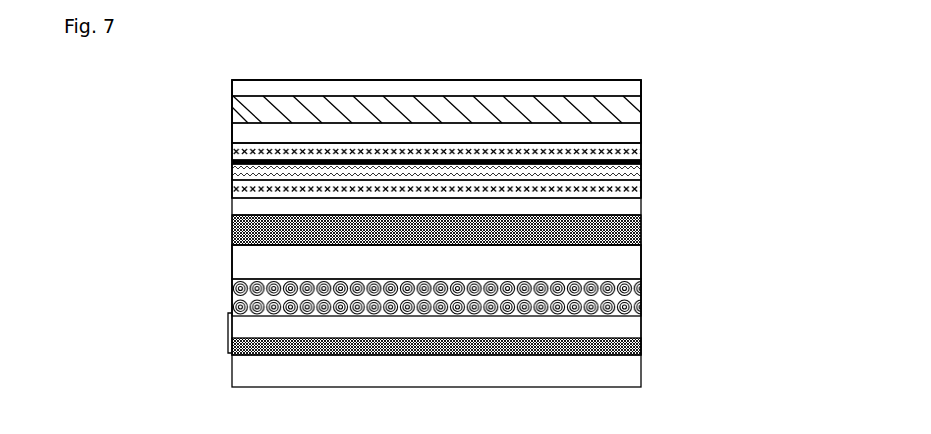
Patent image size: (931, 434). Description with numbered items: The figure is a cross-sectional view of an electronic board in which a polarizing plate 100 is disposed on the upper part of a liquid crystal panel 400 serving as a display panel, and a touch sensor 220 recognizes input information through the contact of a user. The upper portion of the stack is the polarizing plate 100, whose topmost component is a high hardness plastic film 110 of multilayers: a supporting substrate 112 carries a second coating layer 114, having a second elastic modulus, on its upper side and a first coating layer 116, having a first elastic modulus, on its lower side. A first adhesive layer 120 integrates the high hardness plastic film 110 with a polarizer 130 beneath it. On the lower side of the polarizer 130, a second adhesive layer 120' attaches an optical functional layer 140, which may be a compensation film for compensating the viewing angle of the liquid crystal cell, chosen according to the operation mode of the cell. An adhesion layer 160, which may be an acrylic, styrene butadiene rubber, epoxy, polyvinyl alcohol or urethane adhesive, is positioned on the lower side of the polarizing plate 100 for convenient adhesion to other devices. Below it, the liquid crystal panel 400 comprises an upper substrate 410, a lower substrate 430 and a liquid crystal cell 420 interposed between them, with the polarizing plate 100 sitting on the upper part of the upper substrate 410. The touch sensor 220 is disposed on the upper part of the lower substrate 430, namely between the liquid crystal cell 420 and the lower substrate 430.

The polarizing plate 100 is at (800, 93).
The high hardness plastic film 110 is at (741, 65).
The second coating layer 114 is at (641, 82).
The supporting substrate 112 is at (630, 117).
The first coating layer 116 is at (628, 133).
The first adhesive layer 120 is at (507, 141).
The polarizer 130 is at (641, 170).
The second adhesive layer 120' is at (509, 174).
The optical functional layer 140 is at (630, 210).
The adhesion layer 160 is at (641, 230).
The liquid crystal panel 400 is at (800, 243).
The upper substrate 410 is at (630, 267).
The liquid crystal cell 420 is at (641, 294).
The lower substrate 430 is at (630, 367).
The touch sensor 220 is at (228, 334).